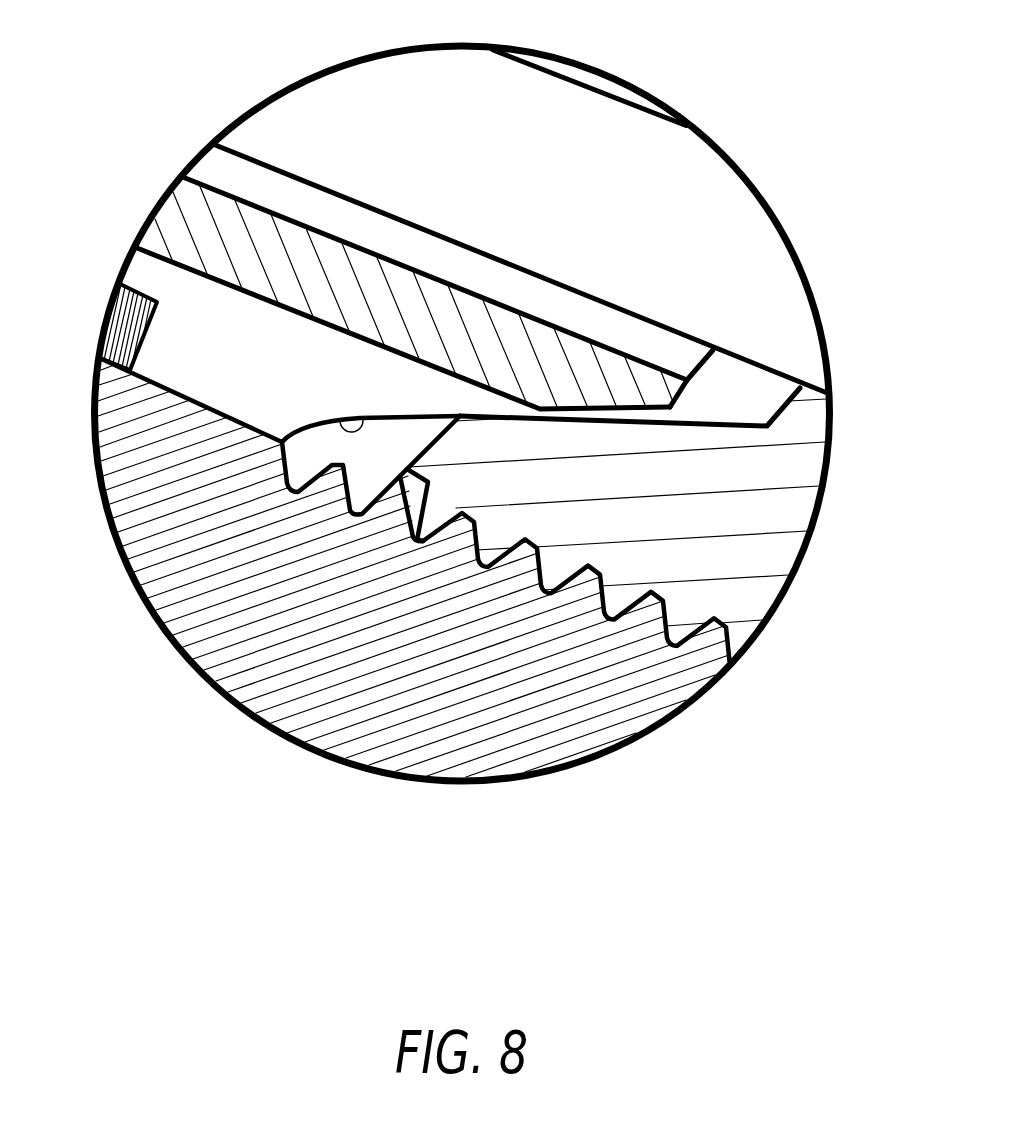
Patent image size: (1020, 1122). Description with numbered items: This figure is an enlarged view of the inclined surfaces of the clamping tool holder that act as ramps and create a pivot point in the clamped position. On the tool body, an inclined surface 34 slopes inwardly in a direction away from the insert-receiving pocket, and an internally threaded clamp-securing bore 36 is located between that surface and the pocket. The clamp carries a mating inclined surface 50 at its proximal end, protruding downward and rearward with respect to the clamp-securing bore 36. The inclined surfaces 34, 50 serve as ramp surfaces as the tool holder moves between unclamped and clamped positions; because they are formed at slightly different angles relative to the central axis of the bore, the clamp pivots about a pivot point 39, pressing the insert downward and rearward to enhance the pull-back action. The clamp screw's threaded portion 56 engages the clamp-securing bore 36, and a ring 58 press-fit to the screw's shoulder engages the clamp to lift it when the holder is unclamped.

The inclined surface 34 is at (707, 420).
The clamp-securing bore 36 is at (463, 512).
The pivot point 39 is at (460, 417).
The inclined surface 50 is at (340, 421).
The threaded portion 56 is at (667, 613).
The ring 58 is at (138, 292).